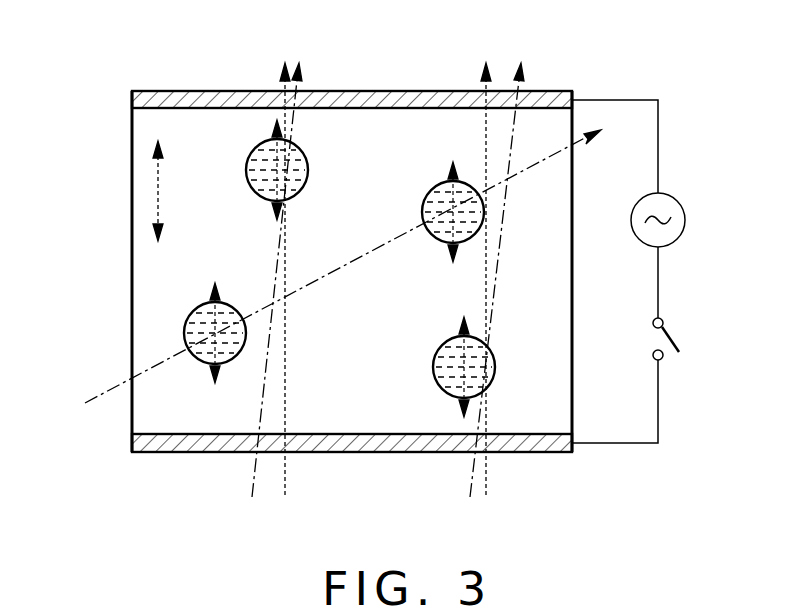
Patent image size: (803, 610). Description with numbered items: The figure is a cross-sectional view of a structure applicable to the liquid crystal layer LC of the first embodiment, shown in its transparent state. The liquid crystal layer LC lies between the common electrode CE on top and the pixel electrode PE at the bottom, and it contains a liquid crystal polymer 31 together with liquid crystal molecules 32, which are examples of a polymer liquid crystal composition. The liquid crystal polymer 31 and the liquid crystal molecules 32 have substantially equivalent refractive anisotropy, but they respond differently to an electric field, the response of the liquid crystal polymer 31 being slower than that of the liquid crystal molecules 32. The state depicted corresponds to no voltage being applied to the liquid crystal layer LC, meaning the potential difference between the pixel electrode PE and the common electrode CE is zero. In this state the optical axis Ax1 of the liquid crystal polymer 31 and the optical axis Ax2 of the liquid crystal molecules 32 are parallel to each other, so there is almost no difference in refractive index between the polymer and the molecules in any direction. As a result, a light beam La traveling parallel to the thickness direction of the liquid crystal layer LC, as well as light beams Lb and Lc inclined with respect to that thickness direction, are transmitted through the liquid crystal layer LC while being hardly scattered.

The liquid crystal polymer 31 is at (140, 298).
The liquid crystal molecules 32 is at (187, 325).
The common electrode CE is at (133, 96).
The pixel electrode PE is at (133, 442).
The liquid crystal layer LC is at (548, 282).
The optical axis of the liquid crystal polymer Ax1 is at (155, 182).
The optical axis of the liquid crystal molecules Ax2 is at (205, 366).
The light beam Lc is at (329, 274).
The light beam La is at (392, 296).
The light beam Lb is at (378, 296).